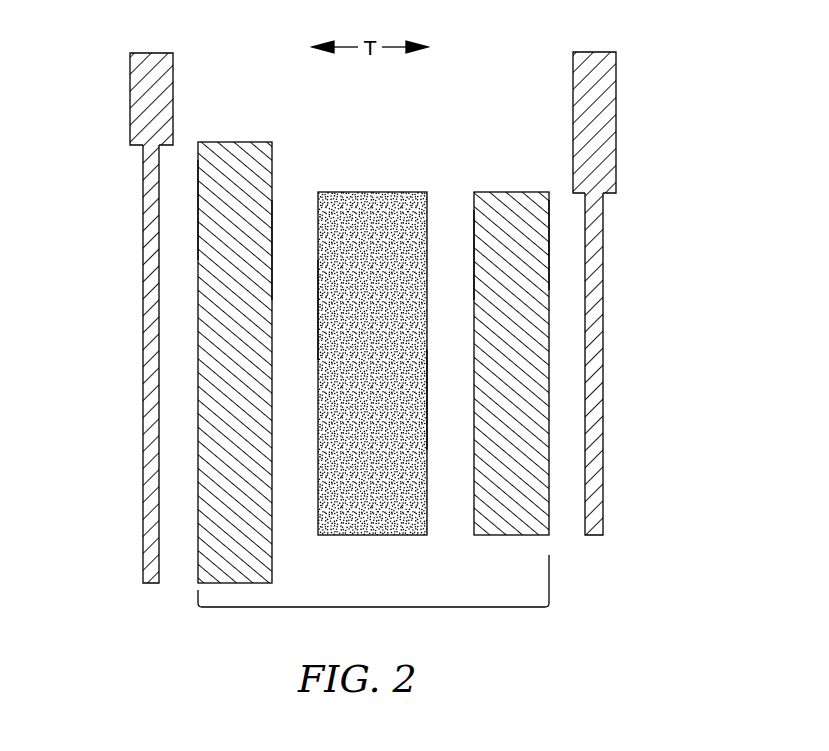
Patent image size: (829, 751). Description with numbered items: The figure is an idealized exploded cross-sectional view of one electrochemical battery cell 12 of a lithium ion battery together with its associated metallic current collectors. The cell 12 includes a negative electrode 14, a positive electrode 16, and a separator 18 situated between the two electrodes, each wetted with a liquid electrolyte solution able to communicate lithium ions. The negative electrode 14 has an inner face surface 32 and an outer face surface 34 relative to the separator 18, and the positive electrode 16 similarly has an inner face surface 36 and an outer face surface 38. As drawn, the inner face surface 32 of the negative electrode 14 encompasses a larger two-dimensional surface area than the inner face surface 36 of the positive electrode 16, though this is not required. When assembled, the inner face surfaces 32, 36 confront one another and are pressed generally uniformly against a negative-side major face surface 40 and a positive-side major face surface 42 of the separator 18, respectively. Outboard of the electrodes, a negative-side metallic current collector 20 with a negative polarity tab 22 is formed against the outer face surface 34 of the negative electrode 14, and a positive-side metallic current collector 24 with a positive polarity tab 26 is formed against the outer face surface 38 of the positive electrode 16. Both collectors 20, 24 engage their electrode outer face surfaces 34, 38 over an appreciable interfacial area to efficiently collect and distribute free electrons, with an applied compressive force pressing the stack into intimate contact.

The electrochemical battery cell 12 is at (370, 607).
The negative electrode 14 is at (240, 142).
The positive electrode 16 is at (512, 192).
The separator 18 is at (372, 192).
The negative-side metallic current collector 20 is at (143, 278).
The negative polarity tab 22 is at (150, 93).
The positive-side metallic current collector 24 is at (603, 297).
The positive polarity tab 26 is at (600, 92).
The inner face surface 32 is at (272, 258).
The outer face surface 34 is at (198, 212).
The inner face surface 36 is at (474, 258).
The outer face surface 38 is at (549, 236).
The negative-side major face surface 40 is at (318, 310).
The positive-side major face surface 42 is at (427, 401).